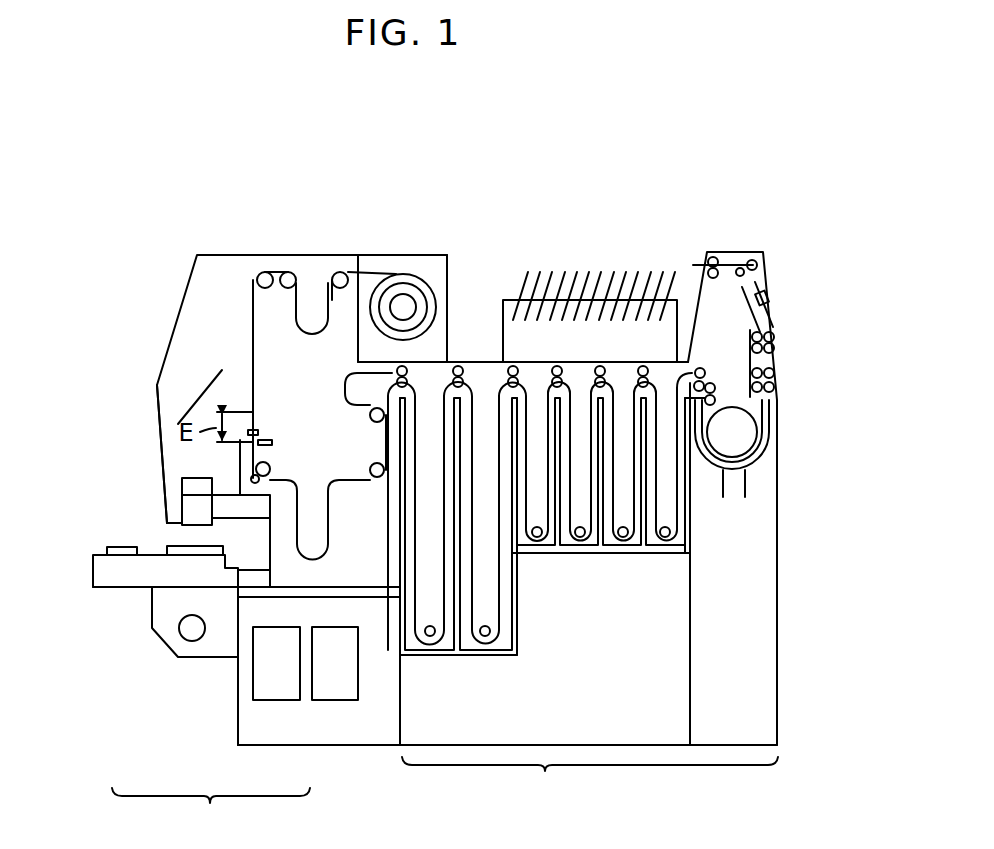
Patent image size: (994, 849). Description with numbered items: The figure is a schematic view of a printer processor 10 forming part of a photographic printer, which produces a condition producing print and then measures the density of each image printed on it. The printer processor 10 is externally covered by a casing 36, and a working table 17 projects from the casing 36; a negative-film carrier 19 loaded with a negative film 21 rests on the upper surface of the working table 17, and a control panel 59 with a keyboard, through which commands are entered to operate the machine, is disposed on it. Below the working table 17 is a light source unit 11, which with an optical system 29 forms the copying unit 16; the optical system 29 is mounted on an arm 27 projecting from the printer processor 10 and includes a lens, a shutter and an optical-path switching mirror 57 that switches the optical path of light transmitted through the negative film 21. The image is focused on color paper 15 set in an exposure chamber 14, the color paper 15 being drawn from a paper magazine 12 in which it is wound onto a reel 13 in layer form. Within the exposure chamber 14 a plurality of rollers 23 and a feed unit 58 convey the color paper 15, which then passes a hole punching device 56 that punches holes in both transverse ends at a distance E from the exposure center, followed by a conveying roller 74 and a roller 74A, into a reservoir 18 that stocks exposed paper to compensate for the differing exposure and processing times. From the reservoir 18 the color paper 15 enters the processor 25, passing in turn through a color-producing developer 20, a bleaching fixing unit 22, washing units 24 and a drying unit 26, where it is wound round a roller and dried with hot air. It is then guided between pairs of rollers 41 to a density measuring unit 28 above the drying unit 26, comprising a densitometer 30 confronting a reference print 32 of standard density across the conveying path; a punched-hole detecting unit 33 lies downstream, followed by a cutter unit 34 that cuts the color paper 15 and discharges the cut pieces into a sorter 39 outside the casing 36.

The printer processor 10 is at (92, 670).
The light source unit 11 is at (162, 636).
The paper magazine 12 is at (430, 262).
The reel 13 is at (418, 297).
The exposure chamber 14 is at (266, 364).
The color paper 15 is at (345, 274).
The copying unit 16 is at (211, 810).
The working table 17 is at (105, 588).
The reservoir 18 is at (338, 549).
The negative-film carrier 19 is at (175, 546).
The color-producing developer 20 is at (430, 656).
The negative film 21 is at (186, 546).
The bleaching fixing unit 22 is at (487, 656).
The rollers 23 is at (262, 273).
The washing units 24 is at (537, 553).
The processor 25 is at (568, 581).
The drying unit 26 is at (733, 494).
The arm 27 is at (215, 265).
The density measuring unit 28 is at (770, 308).
The optical system 29 is at (158, 395).
The densitometer 30 is at (762, 293).
The reference print 32 is at (752, 296).
The punched-hole detecting unit 33 is at (740, 245).
The cutter unit 34 is at (716, 245).
The casing 36 is at (480, 362).
The sorter 39 is at (512, 300).
The pairs of rollers 41 is at (776, 392).
The hole punching device 56 is at (275, 443).
The optical-path switching mirror 57 is at (207, 372).
The feed unit 58 is at (316, 357).
The control panel 59 is at (110, 548).
The conveying roller 74 is at (272, 472).
The roller 74A is at (240, 482).